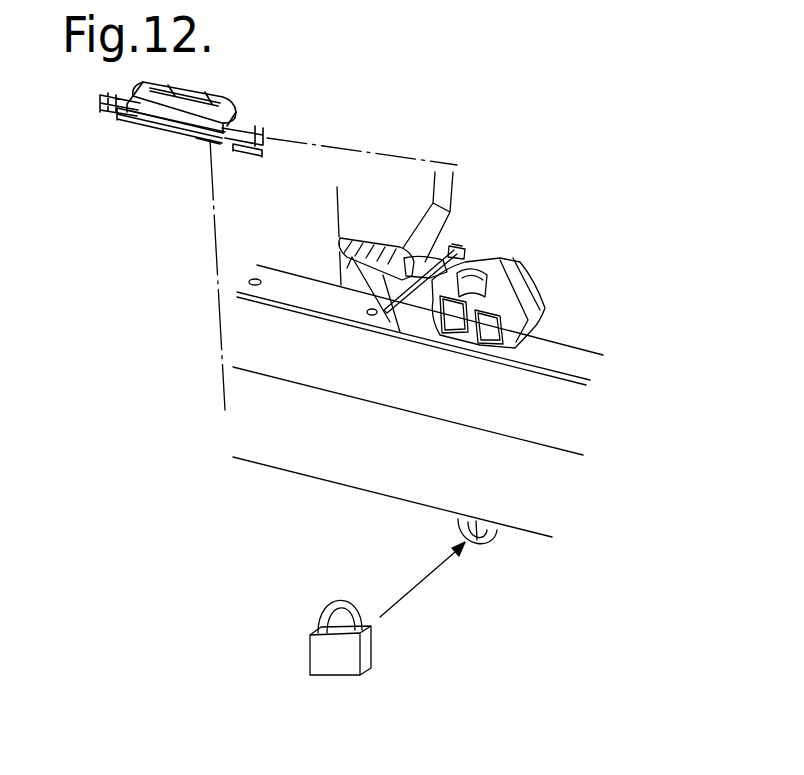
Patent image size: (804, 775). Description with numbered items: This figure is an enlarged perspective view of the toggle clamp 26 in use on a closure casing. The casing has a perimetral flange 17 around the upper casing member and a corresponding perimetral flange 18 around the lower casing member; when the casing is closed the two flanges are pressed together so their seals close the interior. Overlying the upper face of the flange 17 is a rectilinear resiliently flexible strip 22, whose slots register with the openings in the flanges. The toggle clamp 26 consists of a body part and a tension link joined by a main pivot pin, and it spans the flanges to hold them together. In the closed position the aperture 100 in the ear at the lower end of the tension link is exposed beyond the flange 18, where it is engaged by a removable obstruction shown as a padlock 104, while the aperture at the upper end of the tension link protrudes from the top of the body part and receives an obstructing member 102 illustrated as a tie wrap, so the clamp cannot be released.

The perimetral flange 17 is at (575, 420).
The perimetral flange region 18 is at (550, 493).
The resiliently flexible strip 22 is at (573, 363).
The toggle clamp 26 is at (529, 259).
The aperture 100 is at (480, 540).
The obstructing member 102 is at (463, 247).
The padlock 104 is at (313, 652).